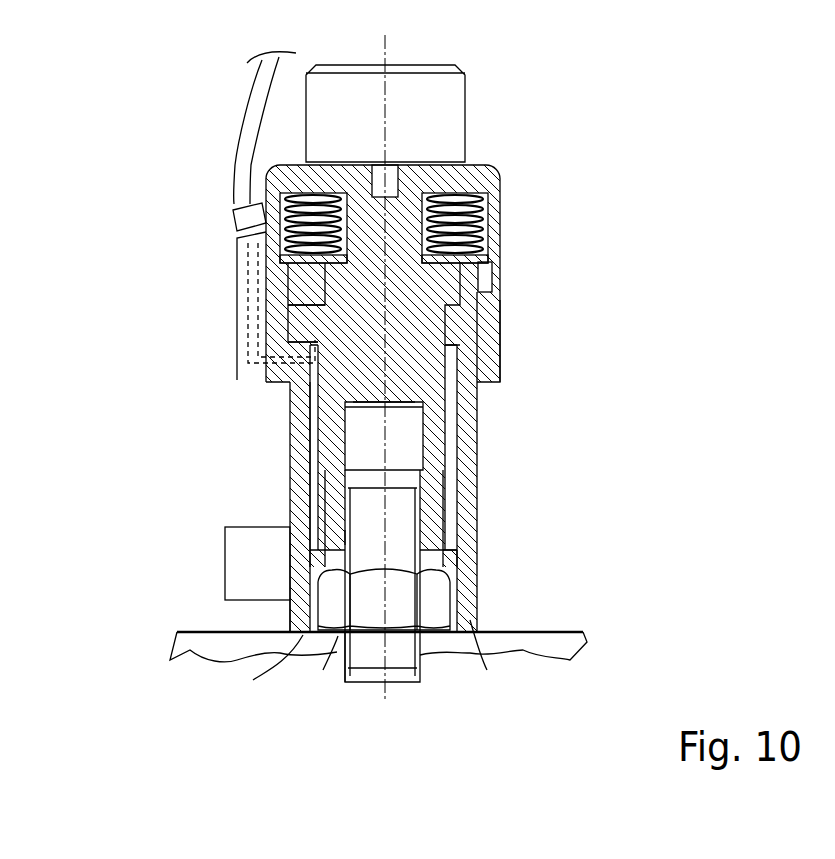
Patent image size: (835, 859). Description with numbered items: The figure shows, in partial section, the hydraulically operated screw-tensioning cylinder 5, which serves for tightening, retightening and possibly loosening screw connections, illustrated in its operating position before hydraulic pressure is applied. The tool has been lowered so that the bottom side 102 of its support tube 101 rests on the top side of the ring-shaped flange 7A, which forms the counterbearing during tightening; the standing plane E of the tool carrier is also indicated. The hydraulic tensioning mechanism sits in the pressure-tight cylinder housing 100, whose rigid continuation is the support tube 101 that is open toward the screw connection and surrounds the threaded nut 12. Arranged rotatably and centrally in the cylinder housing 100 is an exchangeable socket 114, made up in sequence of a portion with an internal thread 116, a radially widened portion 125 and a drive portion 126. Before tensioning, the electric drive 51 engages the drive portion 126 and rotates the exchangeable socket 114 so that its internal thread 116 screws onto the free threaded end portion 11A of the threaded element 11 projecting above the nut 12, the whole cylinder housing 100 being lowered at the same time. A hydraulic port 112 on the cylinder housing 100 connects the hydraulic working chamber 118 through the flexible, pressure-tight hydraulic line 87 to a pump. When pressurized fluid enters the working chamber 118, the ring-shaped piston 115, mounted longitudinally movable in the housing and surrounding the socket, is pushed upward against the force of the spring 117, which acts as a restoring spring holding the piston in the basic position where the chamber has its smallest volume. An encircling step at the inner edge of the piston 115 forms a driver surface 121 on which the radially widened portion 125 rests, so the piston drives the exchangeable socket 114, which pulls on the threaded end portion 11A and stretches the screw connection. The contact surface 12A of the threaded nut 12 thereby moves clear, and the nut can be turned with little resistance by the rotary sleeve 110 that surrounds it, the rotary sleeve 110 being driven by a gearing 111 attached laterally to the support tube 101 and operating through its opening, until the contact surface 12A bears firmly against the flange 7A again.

The screw-tensioning cylinder 5 is at (502, 414).
The ring-shaped flange 7A is at (178, 661).
The threaded element 11 is at (400, 650).
The threaded end portion 11A is at (403, 518).
The threaded nut 12 is at (440, 603).
The contact surface 12A is at (338, 636).
The electric drive 51 is at (300, 113).
The hydraulic line 87 is at (243, 140).
The cylinder housing 100 is at (497, 327).
The support tube 101 is at (436, 549).
The bottom side 102 is at (253, 680).
The rotary sleeve 110 is at (452, 563).
The gearing 111 is at (228, 567).
The hydraulic port 112 is at (252, 256).
The exchangeable socket 114 is at (311, 446).
The piston 115 is at (302, 338).
The internal thread 116 is at (412, 538).
The spring 117 is at (468, 222).
The hydraulic working chamber 118 is at (480, 342).
The driver surface 121 is at (306, 318).
The radially widened portion 125 is at (453, 290).
The drive portion 126 is at (400, 226).
The standing plane E is at (207, 627).